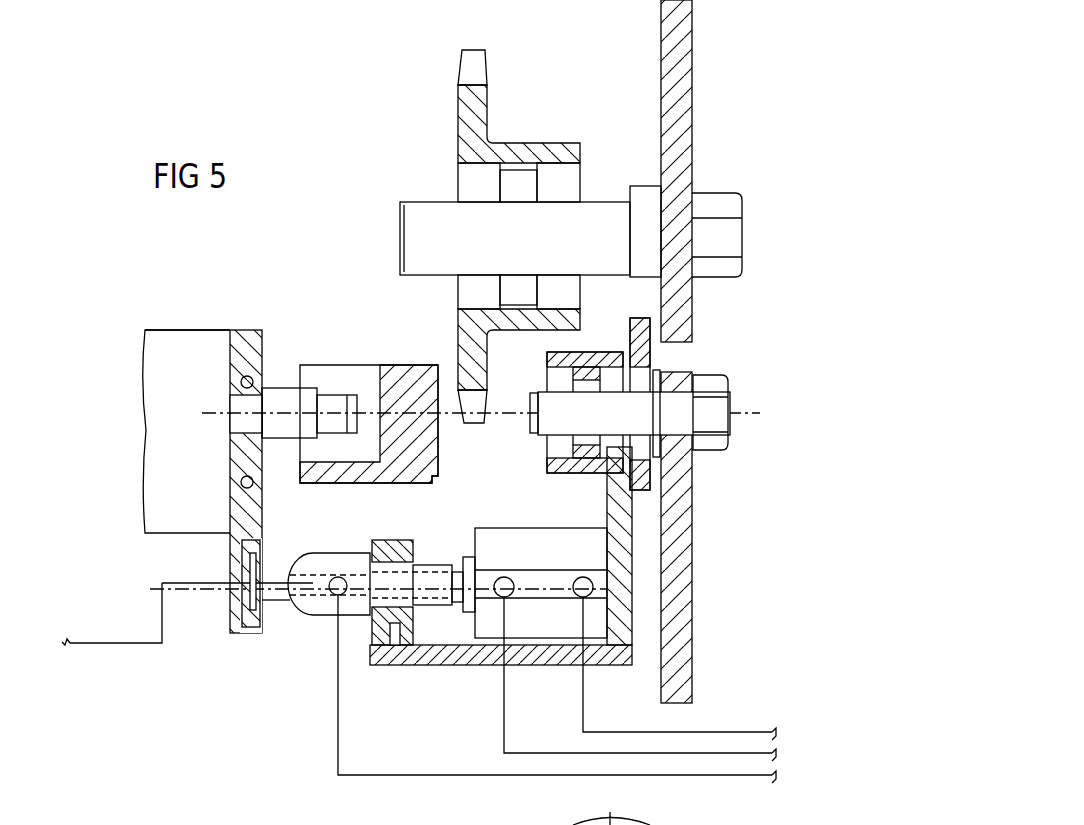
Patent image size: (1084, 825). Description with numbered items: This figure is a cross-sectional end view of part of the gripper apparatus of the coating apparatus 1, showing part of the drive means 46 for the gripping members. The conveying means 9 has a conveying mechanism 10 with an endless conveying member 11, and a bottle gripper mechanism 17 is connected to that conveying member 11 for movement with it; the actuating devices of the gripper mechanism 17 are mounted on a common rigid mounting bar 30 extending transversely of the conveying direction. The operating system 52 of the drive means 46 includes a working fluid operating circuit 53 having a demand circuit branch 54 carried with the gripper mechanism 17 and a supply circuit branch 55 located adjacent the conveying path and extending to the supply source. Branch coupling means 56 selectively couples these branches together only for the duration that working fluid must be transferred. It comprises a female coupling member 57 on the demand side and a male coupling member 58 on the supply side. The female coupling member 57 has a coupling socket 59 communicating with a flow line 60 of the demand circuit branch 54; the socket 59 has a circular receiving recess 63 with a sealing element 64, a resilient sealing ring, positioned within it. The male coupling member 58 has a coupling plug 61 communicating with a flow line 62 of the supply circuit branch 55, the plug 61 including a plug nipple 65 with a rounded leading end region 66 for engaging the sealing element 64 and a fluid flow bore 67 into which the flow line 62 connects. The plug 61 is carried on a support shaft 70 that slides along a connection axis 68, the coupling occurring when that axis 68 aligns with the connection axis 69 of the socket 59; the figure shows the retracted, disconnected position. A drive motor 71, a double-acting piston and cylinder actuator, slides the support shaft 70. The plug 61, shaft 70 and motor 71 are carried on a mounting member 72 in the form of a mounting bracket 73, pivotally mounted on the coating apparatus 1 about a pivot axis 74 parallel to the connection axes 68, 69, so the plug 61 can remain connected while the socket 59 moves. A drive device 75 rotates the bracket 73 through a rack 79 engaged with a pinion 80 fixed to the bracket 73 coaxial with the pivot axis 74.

The coating apparatus 1 is at (699, 30).
The conveying means 9 is at (383, 167).
The conveying mechanism 10 is at (422, 336).
The endless conveying member 11 is at (330, 368).
The bottle gripper mechanism 17 is at (92, 325).
The mounting bar 30 is at (178, 352).
The drive means 46 is at (330, 245).
The operating system 52 is at (315, 310).
The working fluid operating circuit 53 is at (752, 700).
The demand circuit branch 54 is at (100, 638).
The supply circuit branch 55 is at (722, 781).
The branch coupling means 56 is at (250, 683).
The female coupling member 57 is at (266, 547).
The male coupling member 58 is at (346, 535).
The coupling socket 59 is at (236, 548).
The flow line 60 is at (195, 583).
The coupling plug 61 is at (354, 553).
The flow line 62 is at (337, 727).
The receiving recess 63 is at (246, 606).
The sealing element 64 is at (233, 620).
The plug nipple 65 is at (345, 603).
The rounded leading end region 66 is at (300, 560).
The fluid flow bore 67 is at (298, 600).
The connection axis 68 is at (305, 600).
The connection axis 69 is at (164, 596).
The support shaft 70 is at (430, 552).
The drive motor 71 is at (547, 540).
The mounting member 72 is at (642, 583).
The mounting bracket 73 is at (620, 618).
The pivot axis 74 is at (738, 417).
The drive device 75 is at (702, 358).
The rack 79 is at (651, 327).
The pinion 80 is at (647, 470).